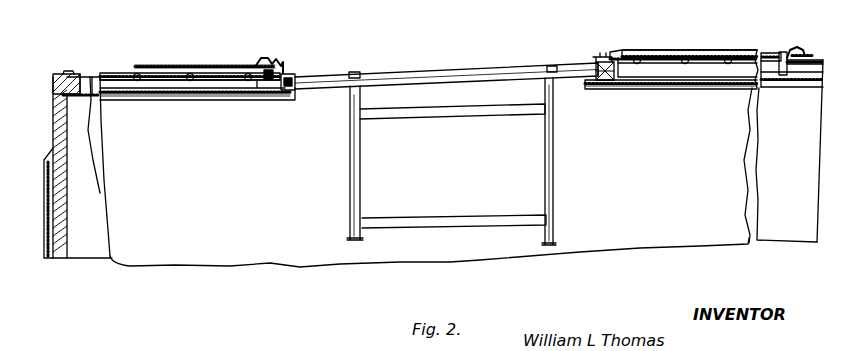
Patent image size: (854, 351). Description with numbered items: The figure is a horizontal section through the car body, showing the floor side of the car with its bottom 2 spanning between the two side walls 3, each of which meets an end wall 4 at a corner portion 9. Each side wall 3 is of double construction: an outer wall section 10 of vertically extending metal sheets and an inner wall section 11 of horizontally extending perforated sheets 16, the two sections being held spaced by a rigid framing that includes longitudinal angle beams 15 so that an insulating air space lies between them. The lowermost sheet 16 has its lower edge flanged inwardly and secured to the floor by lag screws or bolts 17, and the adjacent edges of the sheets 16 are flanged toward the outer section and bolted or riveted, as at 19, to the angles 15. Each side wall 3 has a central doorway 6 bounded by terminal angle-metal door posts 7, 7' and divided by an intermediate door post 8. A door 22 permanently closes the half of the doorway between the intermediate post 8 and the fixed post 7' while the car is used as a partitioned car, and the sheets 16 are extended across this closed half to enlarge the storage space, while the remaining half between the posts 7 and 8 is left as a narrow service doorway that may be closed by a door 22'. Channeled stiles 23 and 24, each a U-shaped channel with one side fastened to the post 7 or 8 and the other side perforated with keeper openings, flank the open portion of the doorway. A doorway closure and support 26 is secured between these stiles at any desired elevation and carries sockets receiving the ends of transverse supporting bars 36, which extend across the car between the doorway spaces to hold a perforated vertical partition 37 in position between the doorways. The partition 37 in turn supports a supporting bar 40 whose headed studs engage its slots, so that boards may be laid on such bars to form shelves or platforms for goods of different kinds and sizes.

The bottom 2 is at (279, 257).
The side wall 3 is at (203, 75).
The end wall 4 is at (45, 225).
The doorway 6 is at (446, 65).
The door post 7 is at (276, 56).
The door post 7' is at (786, 49).
The intermediate door post 8 is at (597, 63).
The corner portion 9 is at (64, 73).
The outer wall section 10 is at (158, 68).
The inner wall section 11 is at (171, 102).
The angle beam 15 is at (227, 80).
The sheet 16 is at (230, 97).
The lag screw or bolt 17 is at (131, 100).
The bolt or rivet 19 is at (195, 92).
The door 22 is at (689, 39).
The door 22' is at (190, 51).
The channeled stile 23 is at (593, 68).
The channeled stile 24 is at (297, 78).
The doorway closure and support 26 is at (387, 80).
The transverse supporting bar 36 is at (352, 178).
The vertical partition 37 is at (362, 172).
The supporting bar 40 is at (472, 111).